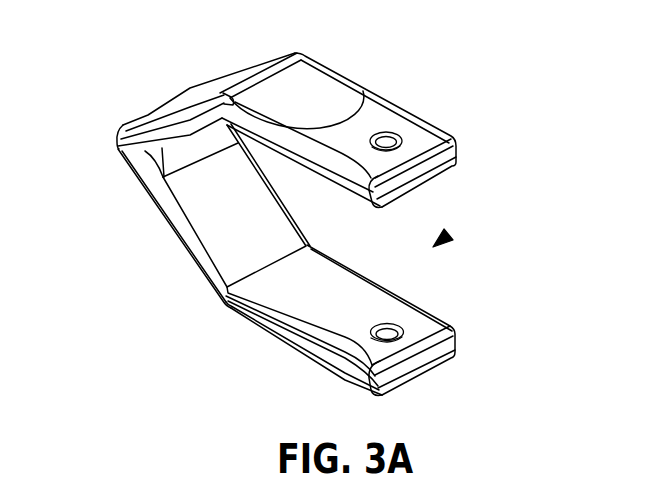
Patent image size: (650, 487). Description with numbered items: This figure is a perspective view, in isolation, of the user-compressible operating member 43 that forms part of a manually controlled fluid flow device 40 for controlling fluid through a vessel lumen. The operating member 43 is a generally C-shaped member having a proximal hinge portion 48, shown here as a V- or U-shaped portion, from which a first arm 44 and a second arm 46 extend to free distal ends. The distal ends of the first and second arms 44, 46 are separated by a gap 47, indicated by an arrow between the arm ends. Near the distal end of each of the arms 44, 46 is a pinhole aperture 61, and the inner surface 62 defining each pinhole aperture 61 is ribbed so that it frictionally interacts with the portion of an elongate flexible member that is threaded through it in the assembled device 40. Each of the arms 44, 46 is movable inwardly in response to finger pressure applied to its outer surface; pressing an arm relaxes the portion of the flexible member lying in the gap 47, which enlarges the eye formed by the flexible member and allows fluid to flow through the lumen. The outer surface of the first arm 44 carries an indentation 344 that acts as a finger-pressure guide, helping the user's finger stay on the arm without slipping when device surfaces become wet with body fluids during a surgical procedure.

The device 40 is at (140, 33).
The user-compressible operating member 43 is at (397, 103).
The first arm 44 is at (453, 138).
The second arm 46 is at (452, 349).
The gap 47 is at (448, 234).
The proximal hinge portion 48 is at (118, 143).
The pinhole aperture 61 is at (372, 146).
The inner surface 62 is at (402, 134).
The indentation 344 is at (325, 63).